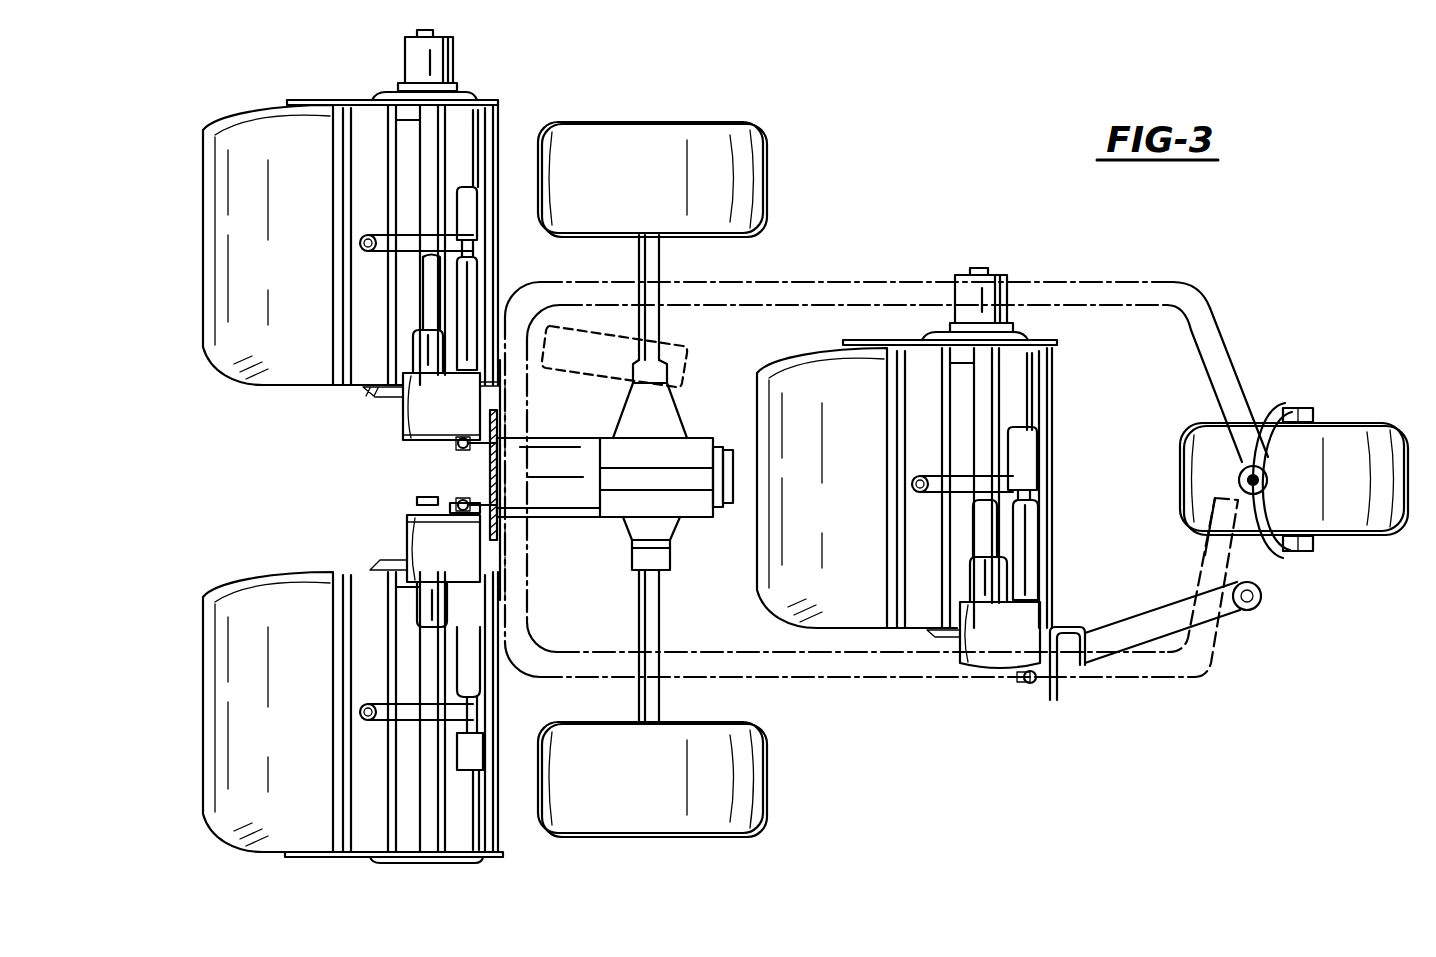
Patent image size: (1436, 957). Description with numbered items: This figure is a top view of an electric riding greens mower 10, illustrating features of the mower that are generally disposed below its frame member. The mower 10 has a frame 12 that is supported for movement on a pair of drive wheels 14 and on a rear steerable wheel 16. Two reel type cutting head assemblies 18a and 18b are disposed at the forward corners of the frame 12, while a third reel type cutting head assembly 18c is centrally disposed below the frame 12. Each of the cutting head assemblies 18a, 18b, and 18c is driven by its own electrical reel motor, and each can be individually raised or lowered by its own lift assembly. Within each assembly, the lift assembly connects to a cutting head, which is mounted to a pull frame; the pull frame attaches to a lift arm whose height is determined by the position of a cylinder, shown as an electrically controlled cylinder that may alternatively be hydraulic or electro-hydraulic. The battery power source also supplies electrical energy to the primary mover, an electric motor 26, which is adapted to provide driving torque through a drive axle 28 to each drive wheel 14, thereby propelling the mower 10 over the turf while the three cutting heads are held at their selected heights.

The electric riding mower 10 is at (887, 158).
The frame 12 is at (1212, 310).
The drive wheels 14 is at (658, 130).
The rear steerable wheel 16 is at (1358, 527).
The reel type cutting head assembly 18a is at (477, 98).
The reel type cutting head assembly 18b is at (495, 857).
The reel type cutting head assembly 18c is at (947, 336).
The electric motor 26 is at (553, 520).
The drive axle 28 is at (659, 318).